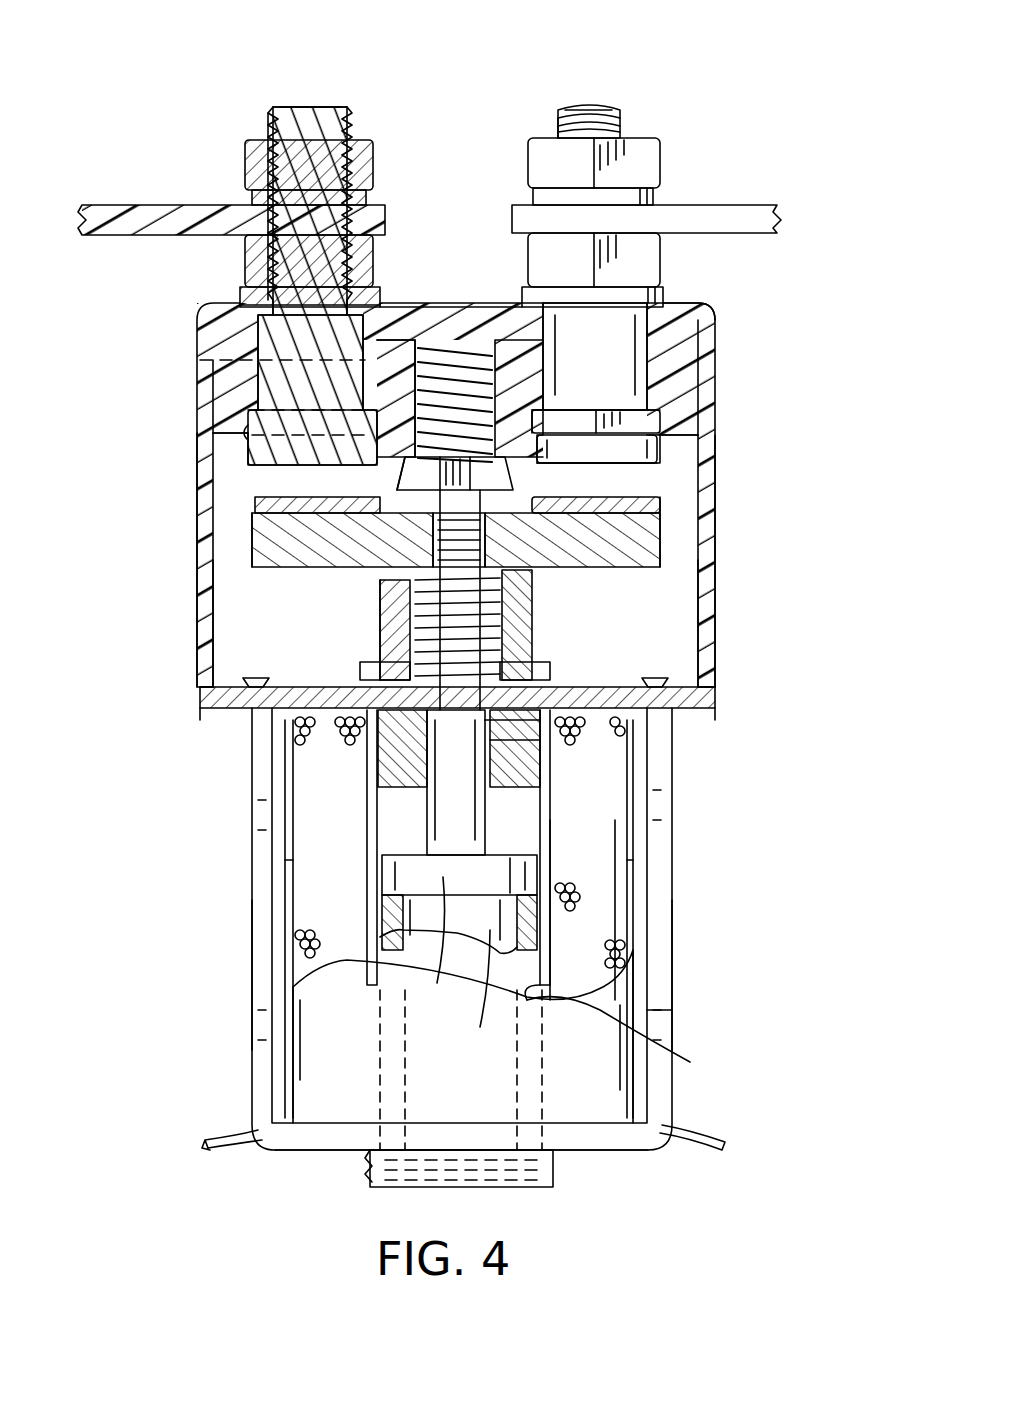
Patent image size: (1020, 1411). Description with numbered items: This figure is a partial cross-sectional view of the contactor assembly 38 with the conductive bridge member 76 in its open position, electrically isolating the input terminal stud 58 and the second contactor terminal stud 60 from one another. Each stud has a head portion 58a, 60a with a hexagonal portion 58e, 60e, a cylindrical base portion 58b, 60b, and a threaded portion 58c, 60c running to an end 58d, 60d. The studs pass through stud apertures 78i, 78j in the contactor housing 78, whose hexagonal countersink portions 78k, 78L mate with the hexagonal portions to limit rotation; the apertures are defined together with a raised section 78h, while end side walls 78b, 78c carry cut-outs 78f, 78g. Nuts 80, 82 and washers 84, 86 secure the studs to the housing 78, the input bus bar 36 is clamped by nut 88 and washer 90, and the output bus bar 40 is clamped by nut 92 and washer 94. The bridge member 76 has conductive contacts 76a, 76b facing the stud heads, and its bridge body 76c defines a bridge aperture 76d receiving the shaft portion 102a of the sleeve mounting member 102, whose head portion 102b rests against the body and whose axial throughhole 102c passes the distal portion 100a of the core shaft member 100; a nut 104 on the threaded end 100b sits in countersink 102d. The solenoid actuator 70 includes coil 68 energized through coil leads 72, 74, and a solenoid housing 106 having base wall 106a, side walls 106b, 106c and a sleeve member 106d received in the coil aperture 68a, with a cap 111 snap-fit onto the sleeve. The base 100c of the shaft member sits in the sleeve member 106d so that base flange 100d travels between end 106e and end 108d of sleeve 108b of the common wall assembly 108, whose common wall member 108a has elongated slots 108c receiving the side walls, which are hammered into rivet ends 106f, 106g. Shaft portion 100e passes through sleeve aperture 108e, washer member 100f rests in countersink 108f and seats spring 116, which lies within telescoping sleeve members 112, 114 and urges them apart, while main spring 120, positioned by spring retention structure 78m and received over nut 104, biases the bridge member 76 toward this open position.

The input bus bar 36 is at (745, 205).
The contactor assembly 38 is at (105, 708).
The output bus bar 40 is at (105, 205).
The input terminal stud 58 is at (615, 104).
The head portion 58a is at (658, 452).
The cylindrical base portion 58b is at (640, 380).
The threaded portion 58c is at (558, 125).
The end 58d is at (576, 106).
The hexagonal portion 58e is at (662, 424).
The second contactor terminal stud 60 is at (338, 100).
The head portion 60a is at (250, 448).
The cylindrical base portion 60b is at (262, 385).
The threaded portion 60c is at (272, 125).
The end 60d is at (310, 106).
The hexagonal portion 60e is at (245, 432).
The coil 68 is at (625, 865).
The coil aperture 68a is at (690, 1062).
The solenoid actuator 70 is at (682, 1016).
The coil lead 72 is at (700, 1130).
The coil lead 74 is at (218, 1138).
The conductive bridge member 76 is at (295, 575).
The conductive contact 76a is at (645, 505).
The conductive contact 76b is at (255, 540).
The bridge body 76c is at (640, 540).
The bridge aperture 76d is at (360, 567).
The contactor housing 78 is at (195, 332).
The end side wall 78b is at (715, 500).
The end side wall 78c is at (200, 492).
The cut-out 78f is at (700, 588).
The cut-out 78g is at (208, 576).
The raised section 78h is at (705, 308).
The stud aperture 78i is at (660, 345).
The stud aperture 78j is at (215, 362).
The hexagonal countersink portion 78k is at (690, 410).
The hexagonal countersink portion 78L is at (225, 440).
The spring retention structure 78m is at (425, 345).
The nut 80 is at (660, 262).
The nut 82 is at (250, 262).
The washer 84 is at (663, 295).
The washer 86 is at (242, 295).
The nut 88 is at (652, 160).
The washer 90 is at (655, 198).
The nut 92 is at (250, 142).
The washer 94 is at (255, 195).
The core shaft member 100 is at (645, 822).
The distal portion 100a is at (432, 528).
The threaded end 100b is at (493, 370).
The base 100c is at (462, 970).
The base flange 100d is at (437, 983).
The shaft portion 100e is at (427, 848).
The washer member 100f is at (530, 720).
The sleeve mounting member 102 is at (515, 490).
The shaft portion 102a is at (630, 567).
The head portion 102b is at (505, 470).
The axial throughhole 102c is at (380, 632).
The countersink 102d is at (398, 480).
The nut 104 is at (500, 425).
The solenoid housing 106 is at (676, 884).
The base wall 106a is at (325, 1152).
The side wall 106b is at (660, 966).
The side wall 106c is at (252, 965).
The sleeve member 106d is at (635, 905).
The end 106e is at (290, 882).
The rivet end 106f is at (700, 685).
The rivet end 106g is at (245, 680).
The common wall assembly 108 is at (716, 693).
The common wall member 108a is at (655, 678).
The sleeve 108b is at (378, 745).
The elongated slot 108c is at (250, 722).
The end 108d is at (370, 815).
The sleeve aperture 108e is at (490, 797).
The countersink 108f is at (520, 672).
The cap 111 is at (545, 1175).
The telescoping sleeve member 112 is at (380, 607).
The telescoping sleeve member 114 is at (360, 665).
The spring 116 is at (500, 610).
The main spring 120 is at (405, 305).